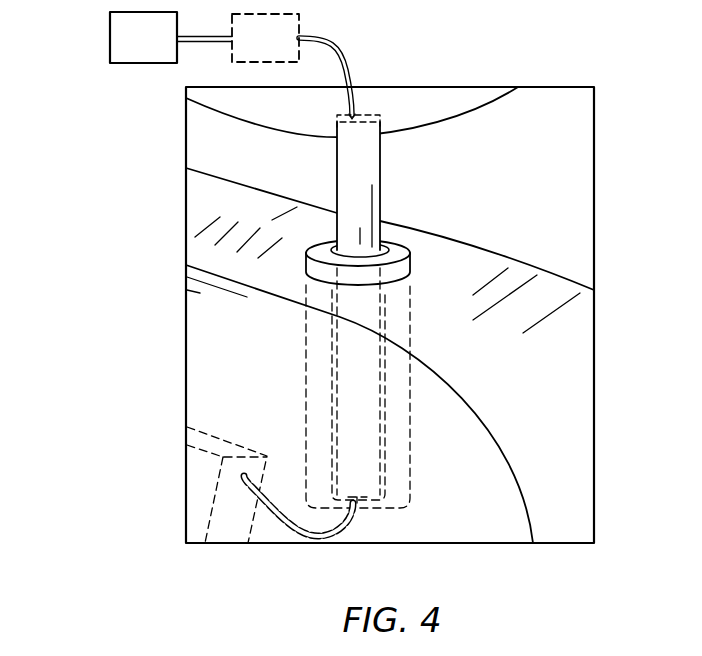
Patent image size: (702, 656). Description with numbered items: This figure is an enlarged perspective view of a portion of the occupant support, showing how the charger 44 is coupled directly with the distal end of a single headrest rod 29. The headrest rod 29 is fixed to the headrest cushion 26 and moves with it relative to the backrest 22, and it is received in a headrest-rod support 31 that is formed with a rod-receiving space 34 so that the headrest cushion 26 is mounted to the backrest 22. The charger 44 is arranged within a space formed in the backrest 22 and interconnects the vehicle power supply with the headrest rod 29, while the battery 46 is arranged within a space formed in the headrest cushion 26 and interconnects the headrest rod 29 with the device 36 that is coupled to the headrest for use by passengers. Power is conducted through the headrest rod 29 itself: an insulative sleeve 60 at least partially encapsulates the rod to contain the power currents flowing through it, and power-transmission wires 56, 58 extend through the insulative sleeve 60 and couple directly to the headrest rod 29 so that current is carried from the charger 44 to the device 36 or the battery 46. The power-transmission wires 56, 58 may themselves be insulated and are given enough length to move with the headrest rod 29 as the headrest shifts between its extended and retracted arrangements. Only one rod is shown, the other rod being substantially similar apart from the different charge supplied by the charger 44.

The backrest 22 is at (570, 331).
The headrest cushion 26 is at (475, 108).
The headrest rod 29 is at (383, 154).
The headrest-rod support 31 is at (415, 267).
The rod-receiving space 34 is at (335, 243).
The device 36 is at (110, 38).
The charger 44 is at (232, 440).
The battery 46 is at (301, 27).
The power-transmission wire 56 is at (323, 548).
The power-transmission wire 58 is at (357, 103).
The insulative sleeve 60 is at (372, 178).